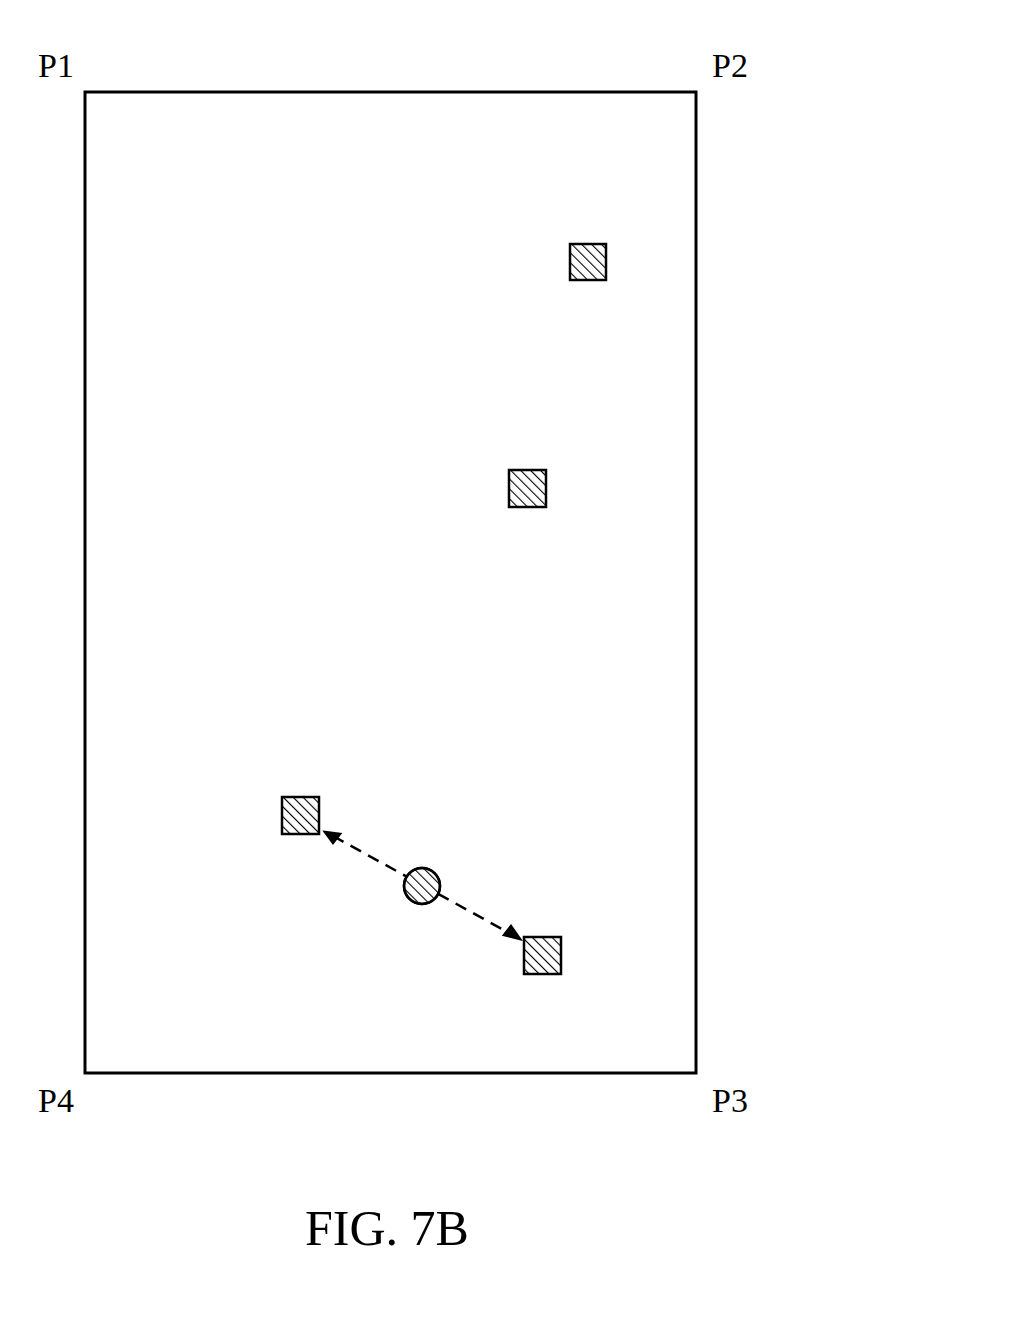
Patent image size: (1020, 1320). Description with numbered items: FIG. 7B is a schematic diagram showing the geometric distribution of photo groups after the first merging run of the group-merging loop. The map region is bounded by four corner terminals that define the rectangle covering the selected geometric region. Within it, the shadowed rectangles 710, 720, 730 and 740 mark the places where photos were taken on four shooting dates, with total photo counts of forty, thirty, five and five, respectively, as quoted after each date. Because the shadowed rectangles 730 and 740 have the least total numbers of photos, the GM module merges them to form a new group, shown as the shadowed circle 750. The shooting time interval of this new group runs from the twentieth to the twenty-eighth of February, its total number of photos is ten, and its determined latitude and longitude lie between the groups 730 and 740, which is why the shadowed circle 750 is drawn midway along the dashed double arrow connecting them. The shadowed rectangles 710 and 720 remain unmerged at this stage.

The shadowed rectangle 710 is at (606, 262).
The shadowed rectangle 720 is at (546, 486).
The shadowed rectangle 730 is at (318, 810).
The shadowed rectangle 740 is at (561, 955).
The shadowed circle 750 is at (440, 882).